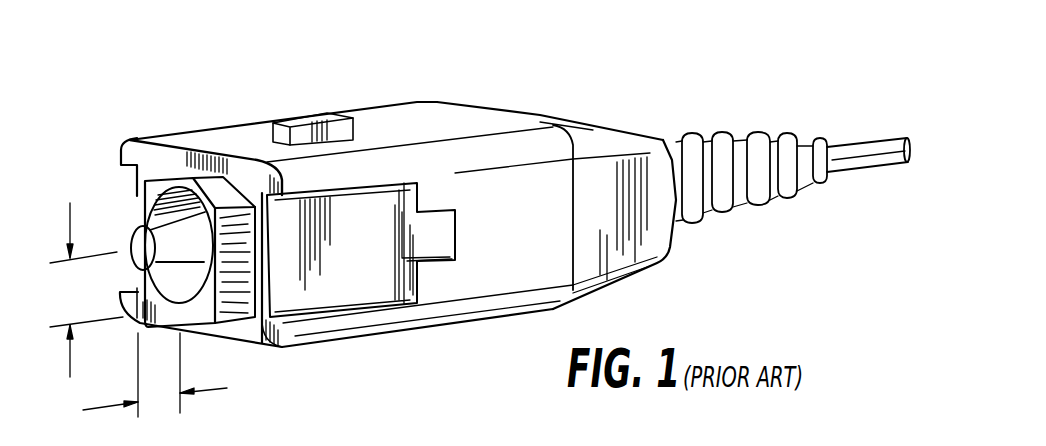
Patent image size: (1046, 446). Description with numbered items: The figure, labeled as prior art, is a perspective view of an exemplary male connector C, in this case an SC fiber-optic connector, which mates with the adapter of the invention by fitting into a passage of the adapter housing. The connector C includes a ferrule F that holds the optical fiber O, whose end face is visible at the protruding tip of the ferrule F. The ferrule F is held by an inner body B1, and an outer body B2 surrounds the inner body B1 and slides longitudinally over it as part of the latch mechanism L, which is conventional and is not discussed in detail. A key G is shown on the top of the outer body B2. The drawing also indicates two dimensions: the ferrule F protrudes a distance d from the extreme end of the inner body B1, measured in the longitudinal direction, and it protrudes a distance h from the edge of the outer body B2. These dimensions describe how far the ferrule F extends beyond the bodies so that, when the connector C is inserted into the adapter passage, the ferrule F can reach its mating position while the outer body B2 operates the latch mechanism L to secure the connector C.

The male connector C is at (383, 70).
The inner body B1 is at (140, 213).
The outer body B2 is at (413, 102).
The key G is at (285, 121).
The ferrule F is at (163, 223).
The optical fiber O is at (140, 243).
The latch mechanism L is at (363, 282).
The distance from edge of outer body h is at (86, 290).
The distance from end of inner body d is at (155, 375).